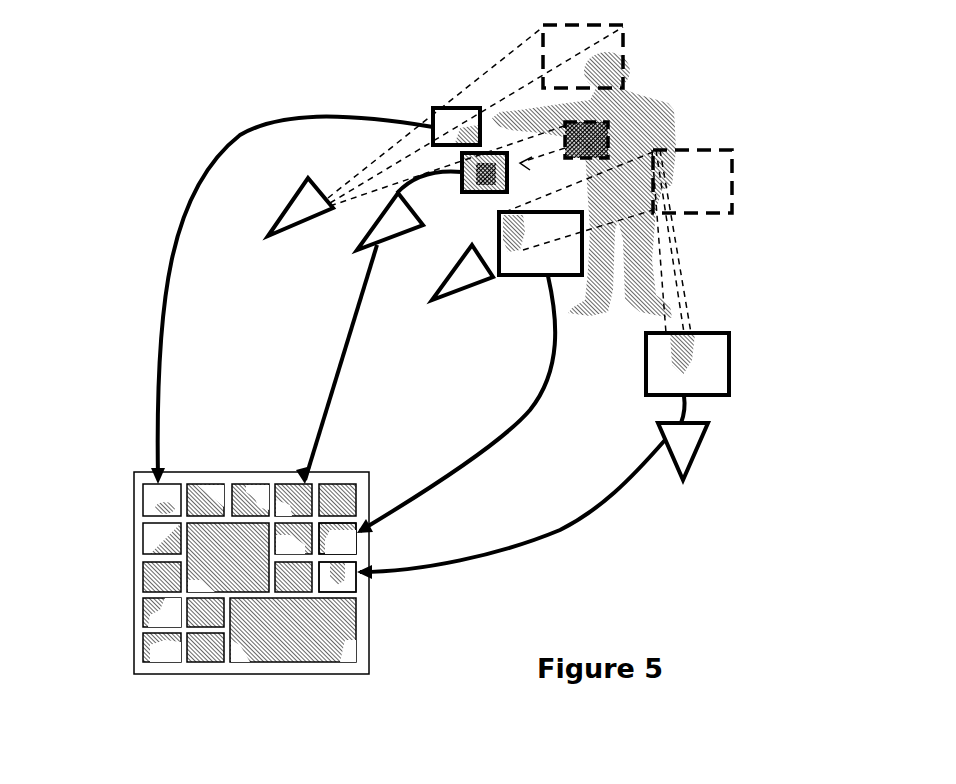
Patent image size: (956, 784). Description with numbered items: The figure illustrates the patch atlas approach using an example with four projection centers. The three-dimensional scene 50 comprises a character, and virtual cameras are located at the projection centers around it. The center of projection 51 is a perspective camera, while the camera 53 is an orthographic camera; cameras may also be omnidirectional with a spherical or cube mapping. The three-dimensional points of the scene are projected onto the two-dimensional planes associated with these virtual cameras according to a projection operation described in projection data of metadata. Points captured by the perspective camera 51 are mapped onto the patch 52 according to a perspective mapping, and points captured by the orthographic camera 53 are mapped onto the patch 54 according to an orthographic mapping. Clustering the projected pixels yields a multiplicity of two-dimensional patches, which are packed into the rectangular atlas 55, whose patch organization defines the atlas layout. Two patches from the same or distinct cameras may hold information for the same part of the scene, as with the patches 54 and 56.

The 3D scene 50 is at (662, 100).
The center of projection 51 is at (280, 200).
The patch 52 is at (435, 108).
The camera 53 is at (700, 453).
The patch 54 is at (730, 362).
The rectangular atlas 55 is at (369, 605).
The patch 56 is at (515, 280).